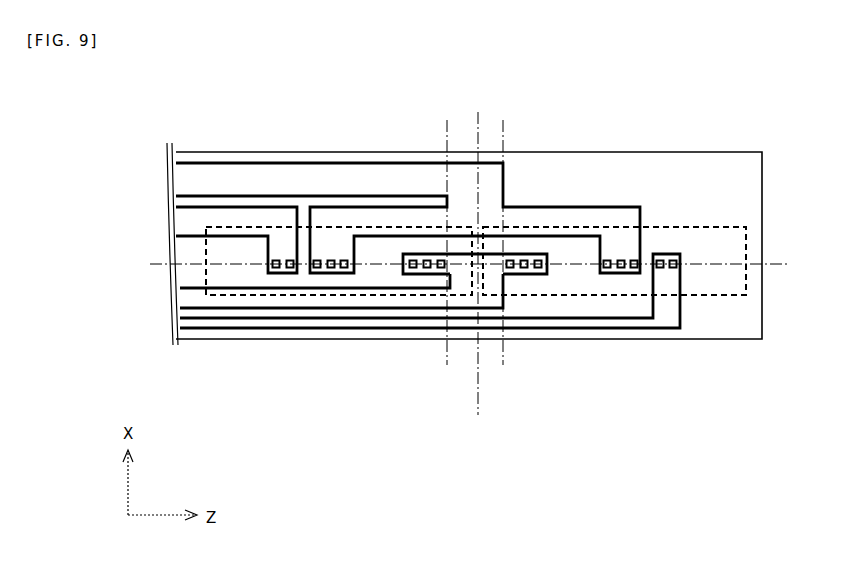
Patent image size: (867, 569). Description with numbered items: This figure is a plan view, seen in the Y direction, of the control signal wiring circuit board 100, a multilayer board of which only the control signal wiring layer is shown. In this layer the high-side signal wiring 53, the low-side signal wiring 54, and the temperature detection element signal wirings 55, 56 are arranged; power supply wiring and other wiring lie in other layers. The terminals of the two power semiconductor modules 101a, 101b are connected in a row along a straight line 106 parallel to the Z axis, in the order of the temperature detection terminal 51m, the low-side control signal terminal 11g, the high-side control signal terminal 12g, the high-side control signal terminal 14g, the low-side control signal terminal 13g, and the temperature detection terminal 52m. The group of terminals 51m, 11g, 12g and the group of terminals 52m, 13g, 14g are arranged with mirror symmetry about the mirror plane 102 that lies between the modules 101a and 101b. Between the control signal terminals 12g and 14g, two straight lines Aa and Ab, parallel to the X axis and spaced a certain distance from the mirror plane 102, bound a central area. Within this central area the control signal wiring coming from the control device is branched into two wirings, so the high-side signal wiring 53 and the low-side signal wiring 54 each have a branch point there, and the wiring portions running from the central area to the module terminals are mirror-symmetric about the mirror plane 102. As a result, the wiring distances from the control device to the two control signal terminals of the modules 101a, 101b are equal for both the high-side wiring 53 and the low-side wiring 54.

The control signal wiring circuit board 100 is at (748, 152).
The power semiconductor module 101a is at (233, 227).
The power semiconductor module 101b is at (706, 227).
The mirror plane 102 is at (480, 252).
The straight line 106 is at (455, 265).
The low-side signal wiring 54 is at (187, 180).
The temperature detection element signal wiring 55 is at (185, 225).
The high-side signal wiring 53 is at (187, 302).
The temperature detection element signal wiring 56 is at (185, 325).
The temperature detection terminal 51m is at (276, 273).
The temperature detection terminal 52m is at (660, 273).
The low-side control signal terminal 11g is at (330, 273).
The high-side control signal terminal 12g is at (414, 273).
The low-side control signal terminal 13g is at (621, 273).
The high-side control signal terminal 14g is at (538, 273).
The straight line Aa is at (447, 256).
The straight line Ab is at (506, 256).